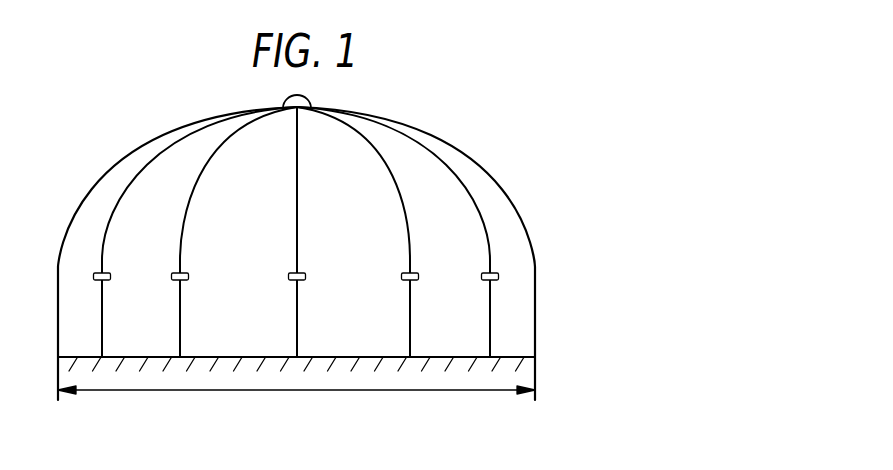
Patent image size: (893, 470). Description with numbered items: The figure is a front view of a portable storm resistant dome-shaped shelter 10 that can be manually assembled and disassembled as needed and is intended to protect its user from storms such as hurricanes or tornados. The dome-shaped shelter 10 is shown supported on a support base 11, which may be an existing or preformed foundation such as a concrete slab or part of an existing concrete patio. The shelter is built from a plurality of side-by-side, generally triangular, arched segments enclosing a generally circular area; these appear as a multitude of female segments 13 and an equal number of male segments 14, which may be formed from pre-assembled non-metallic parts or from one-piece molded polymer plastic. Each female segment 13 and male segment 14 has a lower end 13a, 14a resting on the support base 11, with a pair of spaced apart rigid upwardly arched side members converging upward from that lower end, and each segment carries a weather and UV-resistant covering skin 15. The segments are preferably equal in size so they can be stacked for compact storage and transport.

The dome-shaped shelter 10 is at (486, 148).
The support base 11 is at (108, 363).
The female segment 13 is at (245, 340).
The lower end 13a is at (418, 353).
The male segment 14 is at (135, 340).
The lower end 14a is at (327, 360).
The covering skin 15 is at (219, 313).